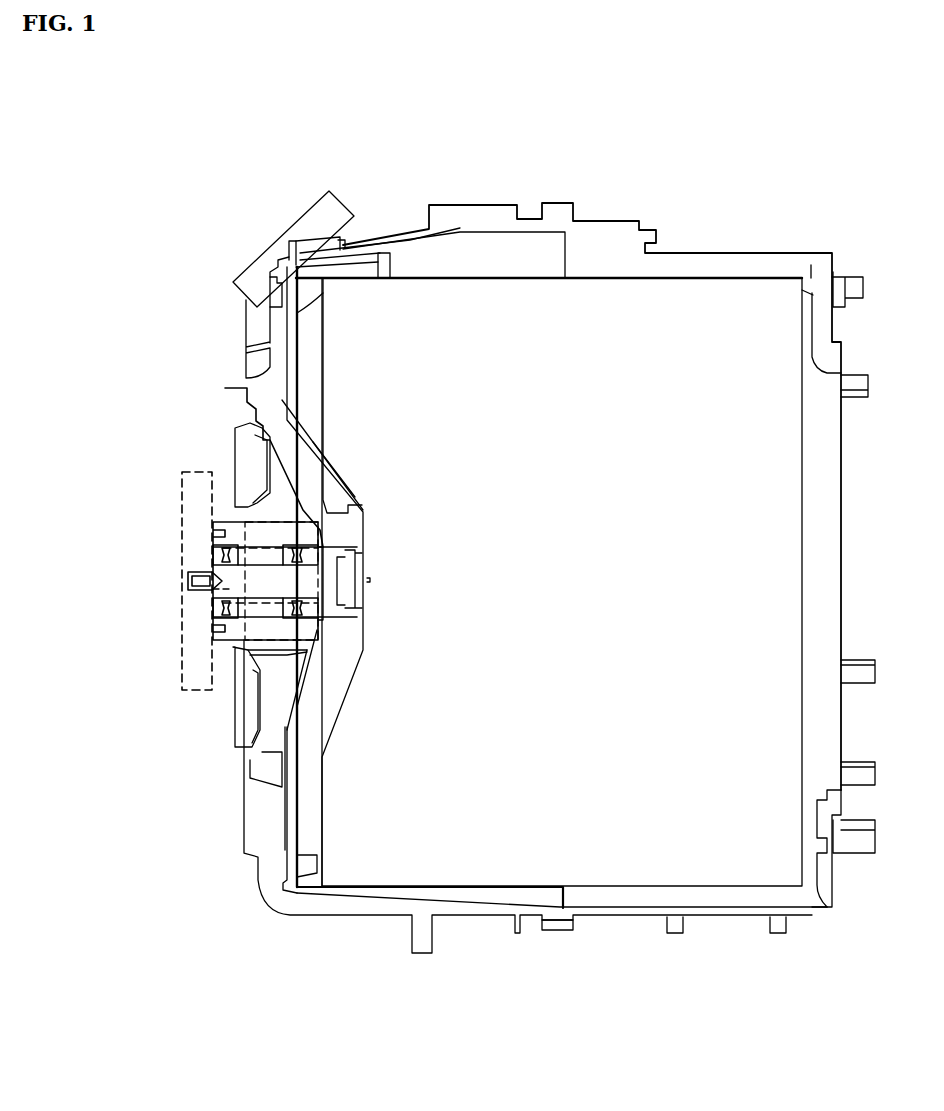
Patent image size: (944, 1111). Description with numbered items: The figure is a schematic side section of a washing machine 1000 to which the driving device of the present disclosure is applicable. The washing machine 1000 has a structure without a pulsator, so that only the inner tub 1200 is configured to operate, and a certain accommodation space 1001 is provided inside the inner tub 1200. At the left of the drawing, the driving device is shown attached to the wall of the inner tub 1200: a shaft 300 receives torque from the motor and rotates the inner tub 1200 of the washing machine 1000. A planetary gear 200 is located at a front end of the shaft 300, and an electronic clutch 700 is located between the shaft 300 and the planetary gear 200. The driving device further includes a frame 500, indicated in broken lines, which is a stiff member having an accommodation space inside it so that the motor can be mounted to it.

The washing machine 1000 is at (341, 153).
The accommodation space 1001 is at (610, 578).
The shaft 300 is at (293, 580).
The frame 500 is at (180, 518).
The electronic clutch 700 is at (225, 588).
The planetary gear 200 is at (282, 642).
The inner tub 1200 is at (327, 680).